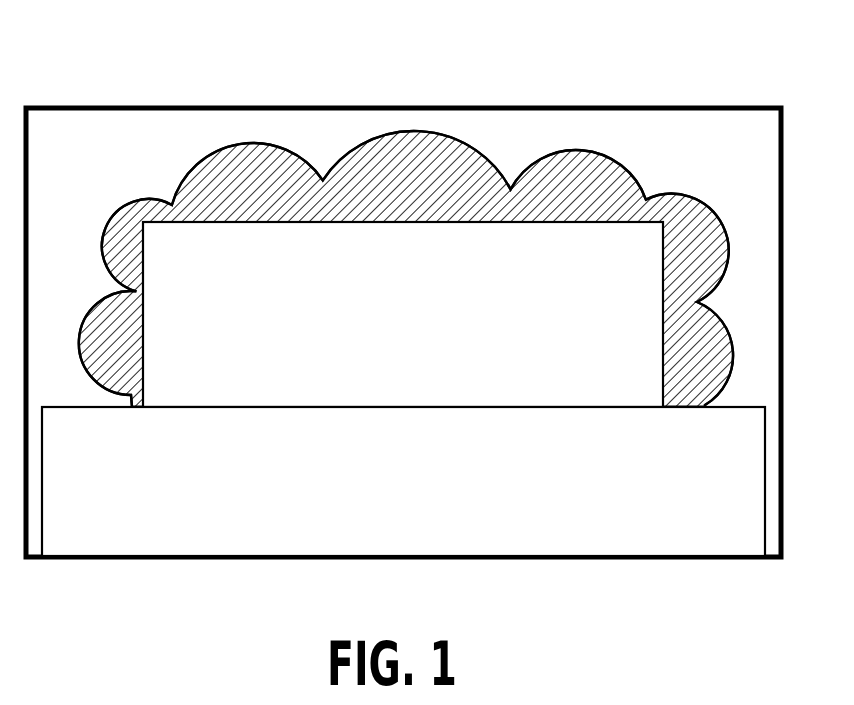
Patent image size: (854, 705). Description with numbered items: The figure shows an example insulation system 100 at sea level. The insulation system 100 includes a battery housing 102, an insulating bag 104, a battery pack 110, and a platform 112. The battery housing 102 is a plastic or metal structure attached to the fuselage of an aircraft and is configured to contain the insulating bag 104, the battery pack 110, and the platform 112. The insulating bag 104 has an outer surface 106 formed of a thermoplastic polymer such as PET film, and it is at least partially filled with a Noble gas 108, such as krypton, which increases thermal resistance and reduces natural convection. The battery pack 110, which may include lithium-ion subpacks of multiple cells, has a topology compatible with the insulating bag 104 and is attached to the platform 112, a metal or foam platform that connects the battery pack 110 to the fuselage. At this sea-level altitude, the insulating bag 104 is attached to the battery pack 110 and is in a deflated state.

The insulation system 100 is at (159, 62).
The battery housing 102 is at (438, 107).
The insulating bag 104 is at (127, 243).
The outer surface 106 is at (162, 198).
The Noble gas 108 is at (256, 193).
The battery pack 110 is at (422, 324).
The platform 112 is at (419, 490).